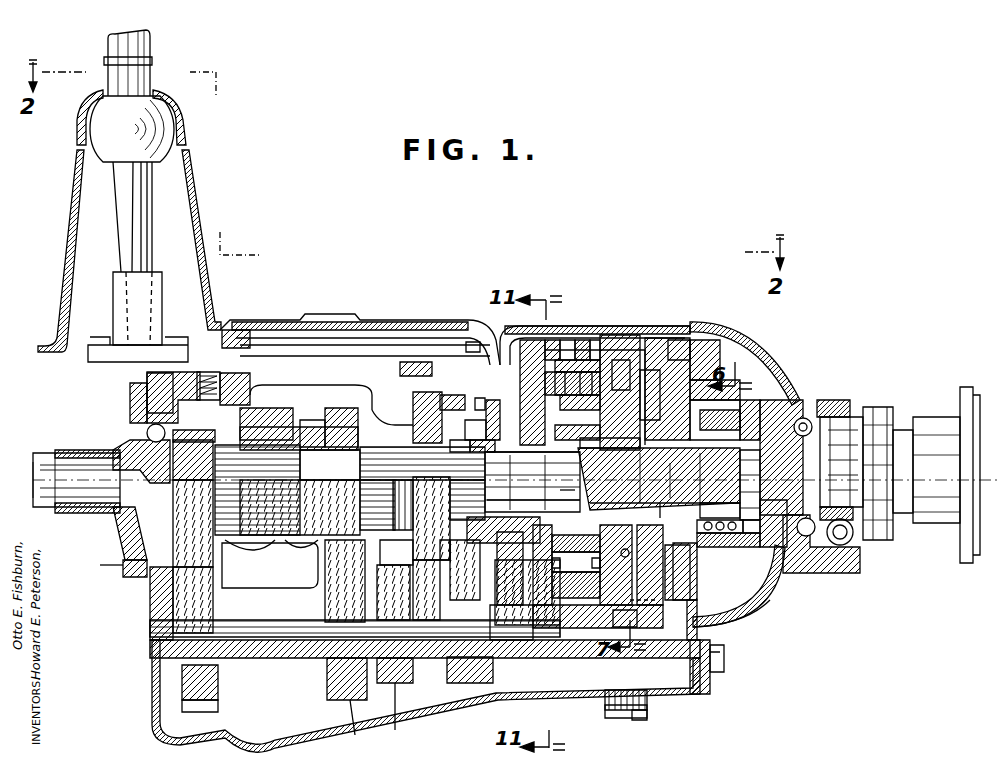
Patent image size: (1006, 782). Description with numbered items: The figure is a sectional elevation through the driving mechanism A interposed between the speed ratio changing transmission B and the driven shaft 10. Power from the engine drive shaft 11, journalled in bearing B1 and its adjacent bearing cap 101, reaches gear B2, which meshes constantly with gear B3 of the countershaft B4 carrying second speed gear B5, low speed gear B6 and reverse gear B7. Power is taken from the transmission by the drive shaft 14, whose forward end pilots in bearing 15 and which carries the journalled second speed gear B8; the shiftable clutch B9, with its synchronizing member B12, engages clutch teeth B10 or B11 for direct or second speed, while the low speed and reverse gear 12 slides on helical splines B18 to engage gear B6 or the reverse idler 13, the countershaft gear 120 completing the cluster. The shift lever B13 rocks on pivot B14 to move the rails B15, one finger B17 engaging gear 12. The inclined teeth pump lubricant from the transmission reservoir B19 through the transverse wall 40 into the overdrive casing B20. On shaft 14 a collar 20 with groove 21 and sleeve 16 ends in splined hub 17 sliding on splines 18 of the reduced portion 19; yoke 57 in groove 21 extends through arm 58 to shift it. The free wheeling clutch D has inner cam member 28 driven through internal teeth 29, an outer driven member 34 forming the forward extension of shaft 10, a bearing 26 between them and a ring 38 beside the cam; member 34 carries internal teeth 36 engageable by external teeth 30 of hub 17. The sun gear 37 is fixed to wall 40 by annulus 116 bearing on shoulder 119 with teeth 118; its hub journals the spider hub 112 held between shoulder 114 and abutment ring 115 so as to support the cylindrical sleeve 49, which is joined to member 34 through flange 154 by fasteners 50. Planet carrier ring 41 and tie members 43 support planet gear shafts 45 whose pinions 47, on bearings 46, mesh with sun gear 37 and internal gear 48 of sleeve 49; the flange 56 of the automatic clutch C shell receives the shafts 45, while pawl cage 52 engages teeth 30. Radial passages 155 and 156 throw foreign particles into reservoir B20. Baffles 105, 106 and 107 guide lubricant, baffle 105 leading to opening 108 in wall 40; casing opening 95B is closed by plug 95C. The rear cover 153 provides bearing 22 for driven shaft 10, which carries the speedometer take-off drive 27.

The shift lever B13 is at (138, 40).
The pivot B14 is at (80, 124).
The speed ratio changing transmission B is at (330, 320).
The shift rails B15 is at (245, 338).
The finger B17 is at (378, 395).
The spider hub 112 is at (468, 340).
The abutment ring 115 is at (508, 345).
The bearing B1 is at (145, 432).
The bearing 15 is at (190, 430).
The clutch teeth B10 is at (224, 400).
The engine drive shaft 11 is at (52, 463).
The bearing cap 101 is at (100, 566).
The gear B2 is at (170, 560).
The countershaft gear B3 is at (180, 610).
The shiftable clutch B9 is at (270, 408).
The second speed gear B8 is at (322, 410).
The helical splines B18 is at (400, 440).
The low speed and reverse gear 12 is at (442, 395).
The shoulder 119 is at (478, 398).
The annulus 116 is at (492, 400).
The teeth 118 is at (476, 420).
The yoke 57 is at (486, 440).
The collar 20 is at (458, 440).
The synchronizing member B12 is at (326, 462).
The clutch teeth B11 is at (300, 560).
The drive shaft 14 is at (510, 466).
The sleeve portion 16 is at (519, 482).
The lubricant guide baffle 107 is at (547, 482).
The lubricant guide baffle 106 is at (540, 450).
The annular groove 21 is at (530, 503).
The sun gear 37 is at (560, 492).
The splined hub portion 17 is at (615, 488).
The external clutch teeth 30 is at (620, 443).
The splines 18 is at (630, 503).
The reduced shaft portion 19 is at (651, 478).
The internal clutch teeth 36 is at (680, 478).
The ring 38 is at (672, 500).
The inner cam member 28 is at (708, 478).
The opening 108 is at (720, 504).
The internal teeth 29 is at (755, 470).
The automatic clutch C is at (650, 340).
The arm 58 is at (628, 352).
The reverse idler 13 is at (590, 380).
The plate or flange 56 is at (648, 370).
The shoulder 114 is at (550, 340).
The internal gear 48 is at (566, 340).
The bearing 46 is at (582, 340).
The planet gear shafts 45 is at (560, 372).
The planetary gear pinions 47 is at (586, 372).
The driving mechanism A is at (596, 340).
The radial passages 155 is at (680, 340).
The flange 154 is at (728, 340).
The radial passages 156 is at (698, 358).
The fasteners 50 is at (722, 380).
The free wheeling clutch D is at (760, 420).
The bearing 22 is at (806, 416).
The speedometer take-off drive 27 is at (860, 575).
The driven shaft 10 is at (848, 440).
The rear cover 153 is at (752, 622).
The cylindrical sleeve 49 is at (580, 628).
The planet carrier ring 41 is at (545, 605).
The tie members 43 is at (590, 605).
The transverse wall 40 is at (510, 640).
The pawl cage 52 is at (652, 610).
The lubricant guide baffle 105 is at (650, 640).
The bearing 26 is at (705, 547).
The outer cylindrical driven member 34 is at (745, 560).
The casing opening 95B is at (636, 695).
The plug 95C is at (634, 716).
The overdrive casing reservoir B20 is at (660, 695).
The countershaft gear 120 is at (475, 592).
The countershaft B4 is at (320, 665).
The reverse gear B7 is at (470, 683).
The second speed gear B5 is at (356, 735).
The low speed gear B6 is at (395, 730).
The transmission reservoir B19 is at (222, 752).